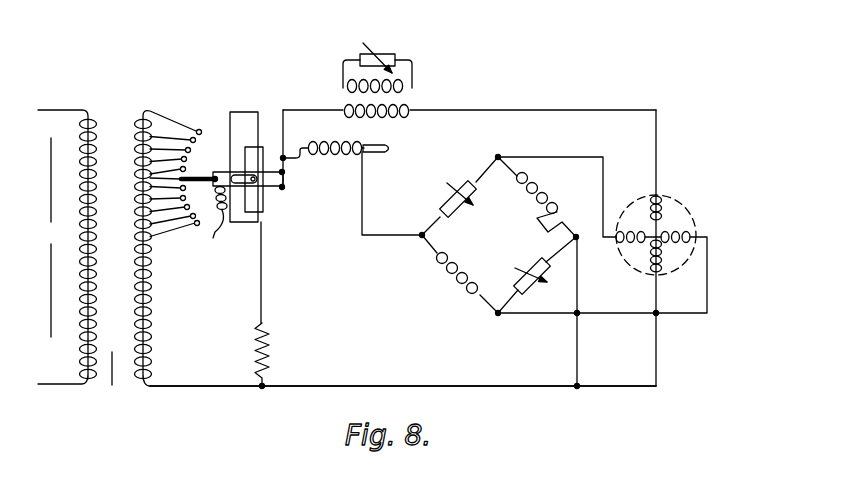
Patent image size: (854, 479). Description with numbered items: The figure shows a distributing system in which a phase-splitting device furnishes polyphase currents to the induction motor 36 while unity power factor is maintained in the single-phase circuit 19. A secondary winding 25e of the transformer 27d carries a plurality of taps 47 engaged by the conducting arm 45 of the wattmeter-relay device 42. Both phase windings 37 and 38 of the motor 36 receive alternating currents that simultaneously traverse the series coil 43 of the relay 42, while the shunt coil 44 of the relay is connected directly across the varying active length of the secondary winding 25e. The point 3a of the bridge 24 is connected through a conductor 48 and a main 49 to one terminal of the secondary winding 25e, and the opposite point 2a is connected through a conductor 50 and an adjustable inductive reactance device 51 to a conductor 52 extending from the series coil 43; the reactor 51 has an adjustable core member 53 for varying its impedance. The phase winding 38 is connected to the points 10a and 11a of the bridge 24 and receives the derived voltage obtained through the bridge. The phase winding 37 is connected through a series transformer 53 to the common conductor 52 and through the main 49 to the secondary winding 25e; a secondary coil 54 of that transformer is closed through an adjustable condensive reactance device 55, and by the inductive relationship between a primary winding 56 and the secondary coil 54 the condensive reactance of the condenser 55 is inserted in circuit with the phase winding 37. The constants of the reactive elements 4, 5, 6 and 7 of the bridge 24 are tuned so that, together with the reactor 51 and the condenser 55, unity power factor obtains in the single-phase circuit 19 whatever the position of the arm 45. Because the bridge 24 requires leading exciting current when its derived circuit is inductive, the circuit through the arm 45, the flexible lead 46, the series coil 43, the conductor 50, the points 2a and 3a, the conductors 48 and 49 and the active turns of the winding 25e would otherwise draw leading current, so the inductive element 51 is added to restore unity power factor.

The single-phase circuit 19 is at (67, 247).
The secondary winding 25e is at (148, 367).
The transformer 27d is at (113, 381).
The taps 47 is at (201, 134).
The conducting arm 45 is at (199, 176).
The shunt coil 44 is at (257, 148).
The wattmeter-relay device 42 is at (268, 207).
The series coil 43 is at (284, 189).
The flexible lead 46 is at (231, 242).
The conductor 52 is at (283, 132).
The adjustable inductive reactance device 51 is at (321, 143).
The adjustable core member 53 is at (343, 99).
The secondary coil 54 is at (410, 90).
The adjustable condensive reactance device 55 is at (378, 53).
The primary winding 56 is at (405, 116).
The conductor 50 is at (362, 200).
The bridge 24 is at (499, 235).
The point of the bridge 2a is at (421, 234).
The point of the bridge 10a is at (505, 148).
The point of the bridge 11a is at (504, 322).
The point of the bridge 3a is at (578, 235).
The reactive element 4 is at (449, 190).
The reactive element 5 is at (545, 192).
The reactive element 6 is at (548, 281).
The reactive element 7 is at (448, 277).
The induction motor 36 is at (677, 203).
The phase winding 37 is at (658, 217).
The phase winding 38 is at (639, 252).
The conductor 48 is at (578, 363).
The main 49 is at (495, 386).